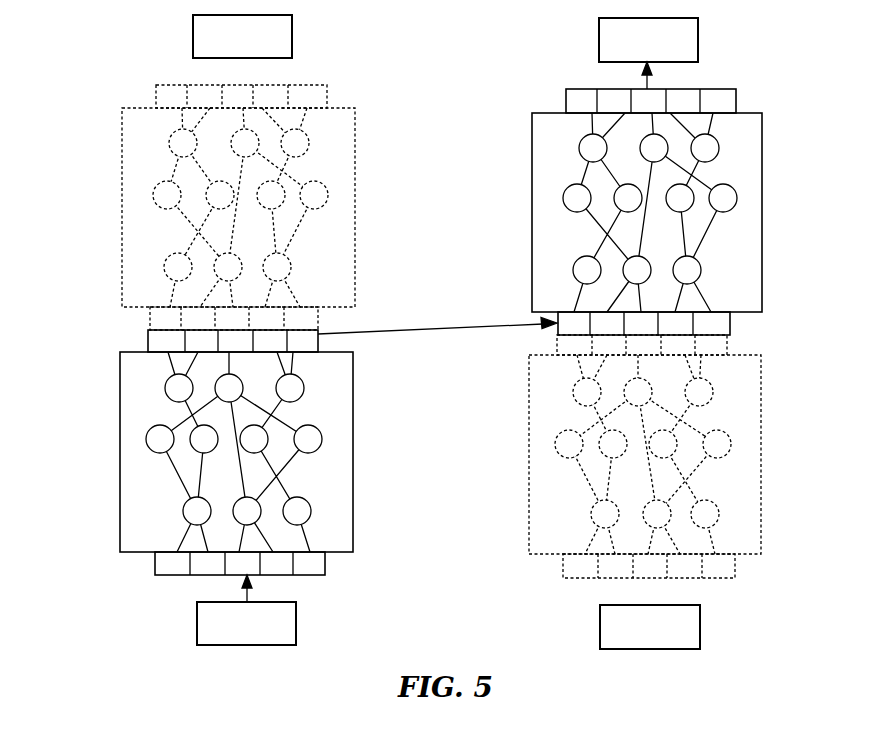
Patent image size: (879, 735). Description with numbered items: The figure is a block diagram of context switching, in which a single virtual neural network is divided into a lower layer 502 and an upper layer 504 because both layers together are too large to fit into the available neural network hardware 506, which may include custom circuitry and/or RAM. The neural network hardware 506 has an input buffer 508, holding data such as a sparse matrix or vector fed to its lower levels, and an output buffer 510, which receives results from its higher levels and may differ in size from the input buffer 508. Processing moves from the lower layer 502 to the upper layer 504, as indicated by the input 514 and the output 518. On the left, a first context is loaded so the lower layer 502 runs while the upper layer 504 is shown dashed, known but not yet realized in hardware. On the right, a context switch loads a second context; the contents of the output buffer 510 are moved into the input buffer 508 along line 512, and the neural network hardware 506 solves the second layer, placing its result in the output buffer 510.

The lower layer 502 is at (90, 333).
The upper layer 504 is at (90, 87).
The neural network hardware 506 is at (353, 453).
The input buffer 508 is at (155, 570).
The output buffer 510 is at (148, 346).
The line 512 is at (447, 329).
The input 514 is at (197, 633).
The output 518 is at (193, 42).